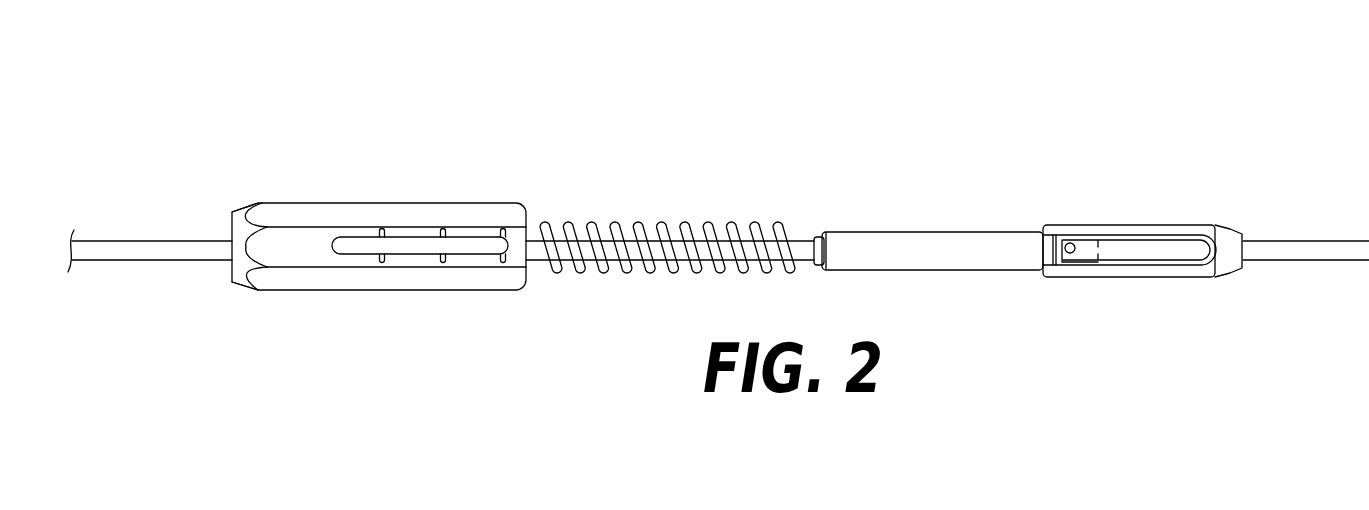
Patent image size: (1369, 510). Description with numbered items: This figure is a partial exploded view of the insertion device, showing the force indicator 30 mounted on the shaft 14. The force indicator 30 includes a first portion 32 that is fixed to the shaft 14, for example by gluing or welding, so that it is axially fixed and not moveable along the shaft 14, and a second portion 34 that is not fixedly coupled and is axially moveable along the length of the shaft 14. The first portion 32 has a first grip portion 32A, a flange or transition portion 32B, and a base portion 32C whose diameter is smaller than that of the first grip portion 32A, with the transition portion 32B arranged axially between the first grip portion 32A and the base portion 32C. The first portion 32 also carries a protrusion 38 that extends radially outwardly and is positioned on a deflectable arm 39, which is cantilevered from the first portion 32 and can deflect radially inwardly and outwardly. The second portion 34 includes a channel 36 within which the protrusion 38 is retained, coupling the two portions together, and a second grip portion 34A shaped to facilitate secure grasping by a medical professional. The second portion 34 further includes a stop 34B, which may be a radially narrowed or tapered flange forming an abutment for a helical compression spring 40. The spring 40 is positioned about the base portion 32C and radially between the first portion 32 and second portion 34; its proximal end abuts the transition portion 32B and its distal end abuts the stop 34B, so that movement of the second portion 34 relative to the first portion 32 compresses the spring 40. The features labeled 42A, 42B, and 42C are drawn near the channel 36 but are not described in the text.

The shaft 14 is at (1315, 239).
The force indicator 30 is at (611, 135).
The first portion 32 is at (980, 158).
The first grip portion 32A is at (1182, 234).
The transition portion 32B is at (1041, 272).
The base portion 32C is at (882, 231).
The second portion 34 is at (359, 136).
The second grip portion 34A is at (297, 283).
The stop 34B is at (236, 206).
The channel 36 is at (414, 247).
The protrusion 38 is at (1072, 244).
The deflectable arm 39 is at (1087, 254).
The spring 40 is at (706, 222).
The detent 42A is at (503, 230).
The detent 42B is at (443, 230).
The detent 42C is at (382, 230).